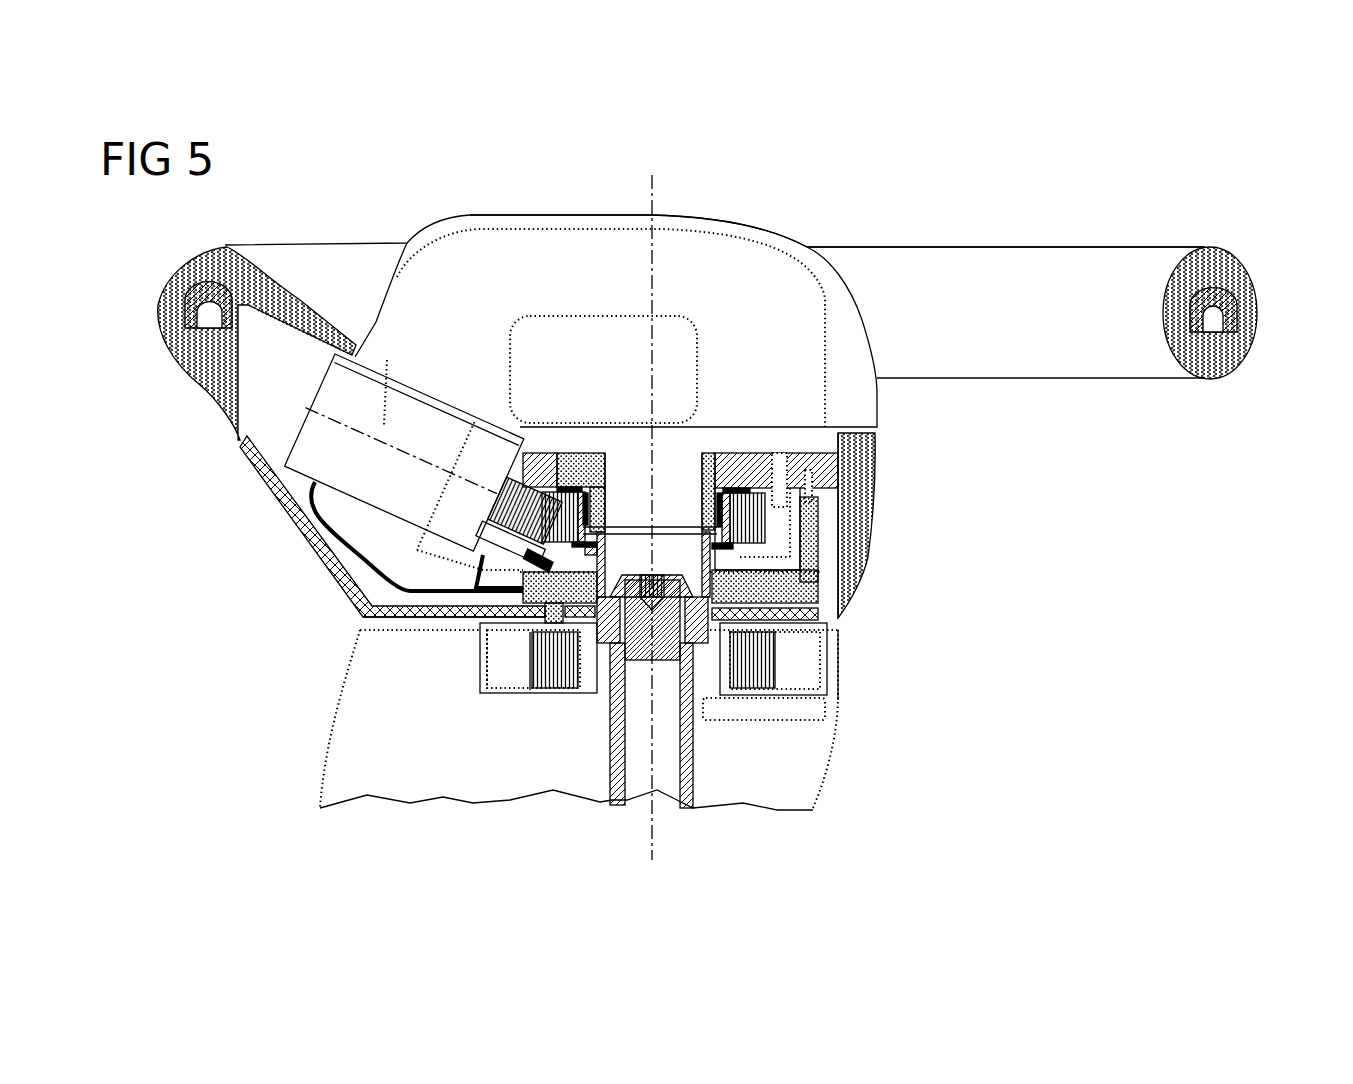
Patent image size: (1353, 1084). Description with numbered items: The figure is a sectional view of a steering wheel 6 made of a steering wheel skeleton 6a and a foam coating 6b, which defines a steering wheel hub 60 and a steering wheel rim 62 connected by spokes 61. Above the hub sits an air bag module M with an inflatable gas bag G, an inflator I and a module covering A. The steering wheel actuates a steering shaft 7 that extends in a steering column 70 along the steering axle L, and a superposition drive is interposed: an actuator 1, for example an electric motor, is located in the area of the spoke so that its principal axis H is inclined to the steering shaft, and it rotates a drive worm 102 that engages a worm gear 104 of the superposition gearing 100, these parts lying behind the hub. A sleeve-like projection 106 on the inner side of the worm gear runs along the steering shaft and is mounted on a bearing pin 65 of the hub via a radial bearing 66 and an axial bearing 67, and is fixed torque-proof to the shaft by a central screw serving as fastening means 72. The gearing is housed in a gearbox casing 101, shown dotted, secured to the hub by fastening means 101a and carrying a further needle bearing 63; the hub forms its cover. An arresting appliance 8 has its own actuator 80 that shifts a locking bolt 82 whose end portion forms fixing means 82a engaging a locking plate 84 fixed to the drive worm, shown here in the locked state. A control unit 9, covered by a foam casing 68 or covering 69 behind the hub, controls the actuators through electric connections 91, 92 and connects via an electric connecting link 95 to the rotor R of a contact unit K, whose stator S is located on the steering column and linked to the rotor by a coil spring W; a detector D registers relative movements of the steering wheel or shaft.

The actuator 1 is at (318, 471).
The steering wheel 6 is at (889, 240).
The steering wheel skeleton 6a is at (1212, 293).
The coating 6b is at (1257, 320).
The steering shaft 7 is at (690, 792).
The arresting appliance 8 is at (374, 620).
The control unit 9 is at (800, 585).
The steering wheel hub 60 is at (876, 449).
The spokes 61 is at (298, 305).
The steering wheel rim 62 is at (1032, 262).
The needle bearing 63 is at (790, 558).
The bearing pin 65 is at (746, 487).
The radial bearing 66 is at (712, 487).
The axial bearing 67 is at (740, 488).
The foam casing 68 is at (872, 496).
The covering 69 is at (243, 442).
The steering column 70 is at (330, 766).
The fastening means 72 is at (632, 645).
The actuator/drive 80 is at (500, 550).
The locking bolt 82 is at (553, 600).
The fixing means 82a is at (522, 612).
The locking plate 84 is at (553, 603).
The electric connection 91 is at (312, 525).
The electric connection 92 is at (535, 585).
The electric connecting link 95 is at (558, 620).
The superposition gearing 100 is at (497, 468).
The gearbox casing 101 is at (418, 560).
The fastening means 101a is at (807, 427).
The drive worm 102 is at (533, 452).
The worm gear 104 is at (565, 453).
The sleeve-like projection 106 is at (605, 645).
The gas bag G is at (486, 226).
The air bag module M is at (561, 208).
The module covering A is at (688, 222).
The inflator I is at (683, 327).
The principal axis H is at (350, 425).
The steering axle L is at (650, 833).
The rotor R is at (829, 627).
The contact unit K is at (840, 641).
The coil spring W is at (775, 657).
The stator S is at (810, 693).
The detector D is at (815, 707).